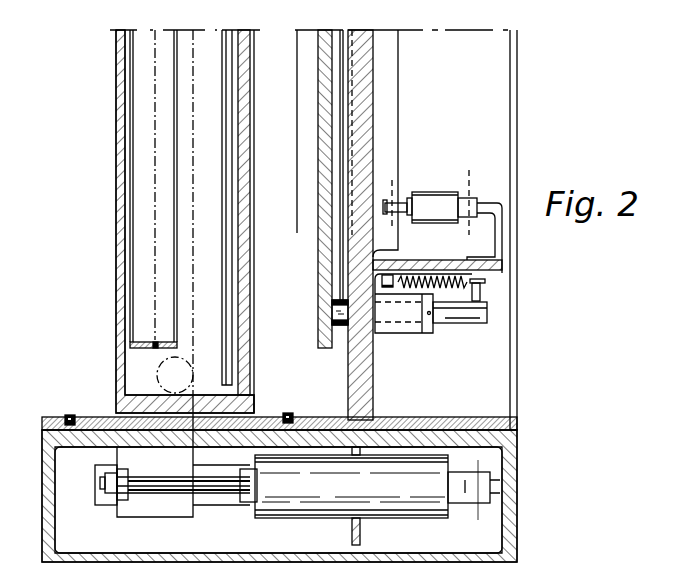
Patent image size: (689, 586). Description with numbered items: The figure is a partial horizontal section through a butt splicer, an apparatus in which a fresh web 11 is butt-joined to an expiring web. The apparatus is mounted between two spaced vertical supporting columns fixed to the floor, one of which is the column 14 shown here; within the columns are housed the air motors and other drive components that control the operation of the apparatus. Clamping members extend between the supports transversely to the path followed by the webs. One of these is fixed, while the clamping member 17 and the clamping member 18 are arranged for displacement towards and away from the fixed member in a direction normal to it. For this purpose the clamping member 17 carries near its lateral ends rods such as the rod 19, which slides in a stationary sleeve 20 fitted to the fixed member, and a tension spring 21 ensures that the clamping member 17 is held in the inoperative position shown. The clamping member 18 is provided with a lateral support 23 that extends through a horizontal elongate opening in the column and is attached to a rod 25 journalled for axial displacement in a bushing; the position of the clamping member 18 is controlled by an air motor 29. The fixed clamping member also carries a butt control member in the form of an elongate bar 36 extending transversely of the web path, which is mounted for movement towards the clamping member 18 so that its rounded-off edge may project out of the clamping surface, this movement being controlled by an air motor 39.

The fresh web 11 is at (297, 113).
The vertical supporting column 14 is at (510, 500).
The clamping member 17 is at (324, 333).
The clamping member 18 is at (119, 376).
The rod 19 is at (473, 318).
The sleeve 20 is at (410, 328).
The tension spring 21 is at (484, 293).
The lateral support 23 is at (173, 507).
The rod 25 is at (223, 500).
The air motor 29 is at (395, 505).
The butt control bar 36 is at (389, 115).
The air motor 39 is at (455, 192).